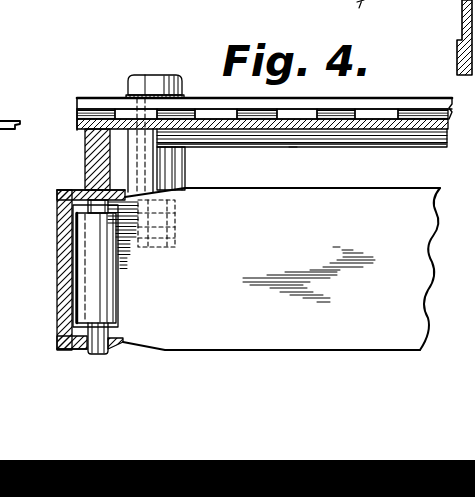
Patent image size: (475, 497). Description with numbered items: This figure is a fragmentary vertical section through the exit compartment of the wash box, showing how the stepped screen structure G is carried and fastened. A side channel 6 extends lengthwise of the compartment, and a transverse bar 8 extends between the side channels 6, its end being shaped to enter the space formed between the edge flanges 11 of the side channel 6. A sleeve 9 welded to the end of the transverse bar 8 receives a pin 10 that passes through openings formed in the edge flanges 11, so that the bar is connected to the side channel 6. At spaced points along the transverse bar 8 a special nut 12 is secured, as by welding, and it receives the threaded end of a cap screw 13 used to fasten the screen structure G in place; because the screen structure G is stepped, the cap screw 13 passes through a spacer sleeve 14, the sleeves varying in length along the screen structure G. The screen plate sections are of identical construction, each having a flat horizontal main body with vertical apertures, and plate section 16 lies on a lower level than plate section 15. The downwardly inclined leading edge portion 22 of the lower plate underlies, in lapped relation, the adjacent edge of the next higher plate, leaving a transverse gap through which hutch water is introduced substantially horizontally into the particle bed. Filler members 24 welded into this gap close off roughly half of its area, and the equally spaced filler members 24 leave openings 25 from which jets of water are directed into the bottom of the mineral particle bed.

The side channel 6 is at (63, 270).
The transverse bar 8 is at (274, 269).
The sleeve 9 is at (118, 287).
The pin 10 is at (80, 187).
The edge flange 11 is at (58, 192).
The special nut 12 is at (182, 217).
The cap screw 13 is at (137, 77).
The spacer sleeve 14 is at (187, 167).
The screen plate section 15 is at (195, 100).
The screen plate section 16 is at (343, 122).
The leading edge portion 22 is at (415, 145).
The filler member 24 is at (80, 112).
The opening 25 is at (228, 117).
The screen structure G is at (296, 154).